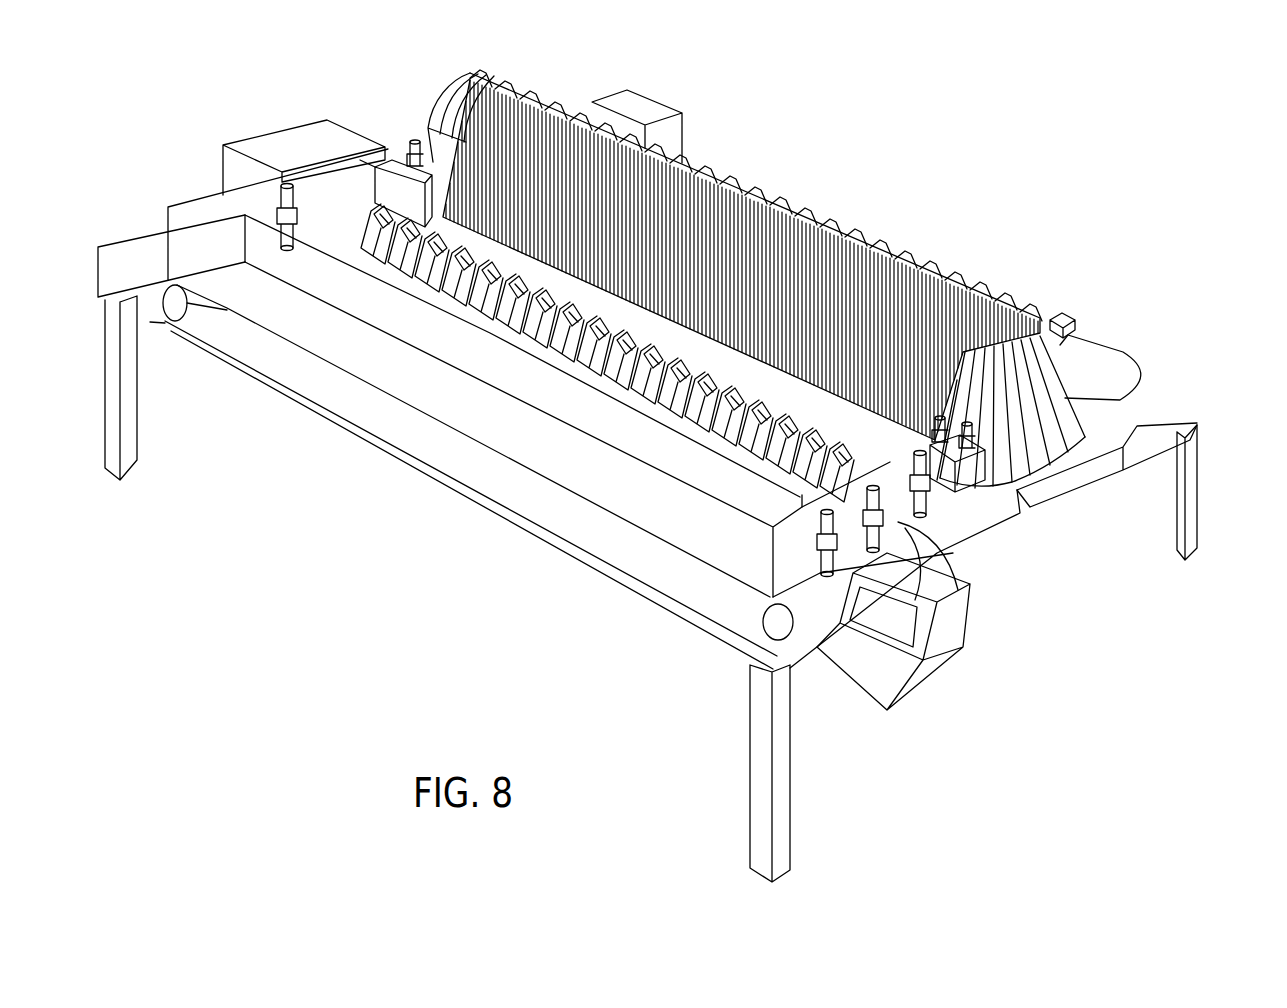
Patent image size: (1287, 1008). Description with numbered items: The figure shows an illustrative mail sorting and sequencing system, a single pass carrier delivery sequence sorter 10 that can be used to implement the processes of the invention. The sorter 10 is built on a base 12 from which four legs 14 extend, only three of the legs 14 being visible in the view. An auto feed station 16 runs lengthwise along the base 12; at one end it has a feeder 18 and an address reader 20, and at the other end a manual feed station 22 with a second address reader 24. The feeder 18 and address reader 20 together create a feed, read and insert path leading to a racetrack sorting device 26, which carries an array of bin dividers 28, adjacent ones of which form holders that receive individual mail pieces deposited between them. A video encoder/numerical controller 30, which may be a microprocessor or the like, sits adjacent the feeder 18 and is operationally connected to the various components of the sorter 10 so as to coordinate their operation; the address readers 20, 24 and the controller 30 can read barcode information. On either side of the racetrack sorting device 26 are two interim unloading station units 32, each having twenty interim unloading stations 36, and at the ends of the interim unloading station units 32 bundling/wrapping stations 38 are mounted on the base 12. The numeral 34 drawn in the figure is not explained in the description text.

The single pass carrier delivery sequence sorter 10 is at (918, 197).
The base 12 is at (698, 618).
The legs 14 is at (110, 414).
The auto feed station 16 is at (470, 462).
The feeder 18 is at (983, 553).
The address reader 20 is at (1033, 504).
The manual feed station 22 is at (138, 243).
The second address reader 24 is at (395, 160).
The racetrack sorting device 26 is at (693, 147).
The bin dividers 28 is at (953, 273).
The video encoder/numerical controller 30 is at (965, 606).
The interim unloading station units 32 is at (615, 392).
The clamp block 34 is at (850, 203).
The interim unloading stations 36 is at (813, 200).
The bundling/wrapping stations 38 is at (307, 135).